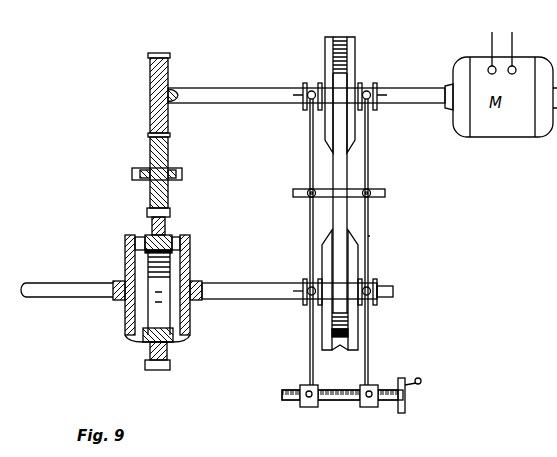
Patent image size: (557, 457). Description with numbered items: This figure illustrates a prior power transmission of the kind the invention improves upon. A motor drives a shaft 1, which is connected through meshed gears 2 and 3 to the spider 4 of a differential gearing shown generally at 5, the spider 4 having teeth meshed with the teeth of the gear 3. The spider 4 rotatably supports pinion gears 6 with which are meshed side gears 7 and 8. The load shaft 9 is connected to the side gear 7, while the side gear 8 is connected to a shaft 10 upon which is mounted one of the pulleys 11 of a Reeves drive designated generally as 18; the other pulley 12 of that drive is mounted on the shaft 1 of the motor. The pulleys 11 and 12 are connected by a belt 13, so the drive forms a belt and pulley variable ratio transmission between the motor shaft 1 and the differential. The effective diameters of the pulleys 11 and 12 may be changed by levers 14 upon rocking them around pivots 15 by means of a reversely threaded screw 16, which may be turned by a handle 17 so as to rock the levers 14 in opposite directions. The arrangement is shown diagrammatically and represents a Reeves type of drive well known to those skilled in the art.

The shaft 1 is at (233, 100).
The gear 2 is at (160, 95).
The gear 3 is at (156, 155).
The spider 4 is at (151, 220).
The differential gearing 5 is at (138, 294).
The pinion gears 6 is at (170, 243).
The side gear 7 is at (126, 262).
The side gear 8 is at (186, 270).
The load shaft 9 is at (50, 297).
The shaft 10 is at (246, 297).
The pulley 11 is at (355, 262).
The pulley 12 is at (350, 145).
The belt 13 is at (345, 216).
The levers 14 is at (308, 161).
The pivots 15 is at (309, 196).
The reversely threaded screw 16 is at (335, 392).
The handle 17 is at (416, 378).
The Reeves drive 18 is at (386, 239).